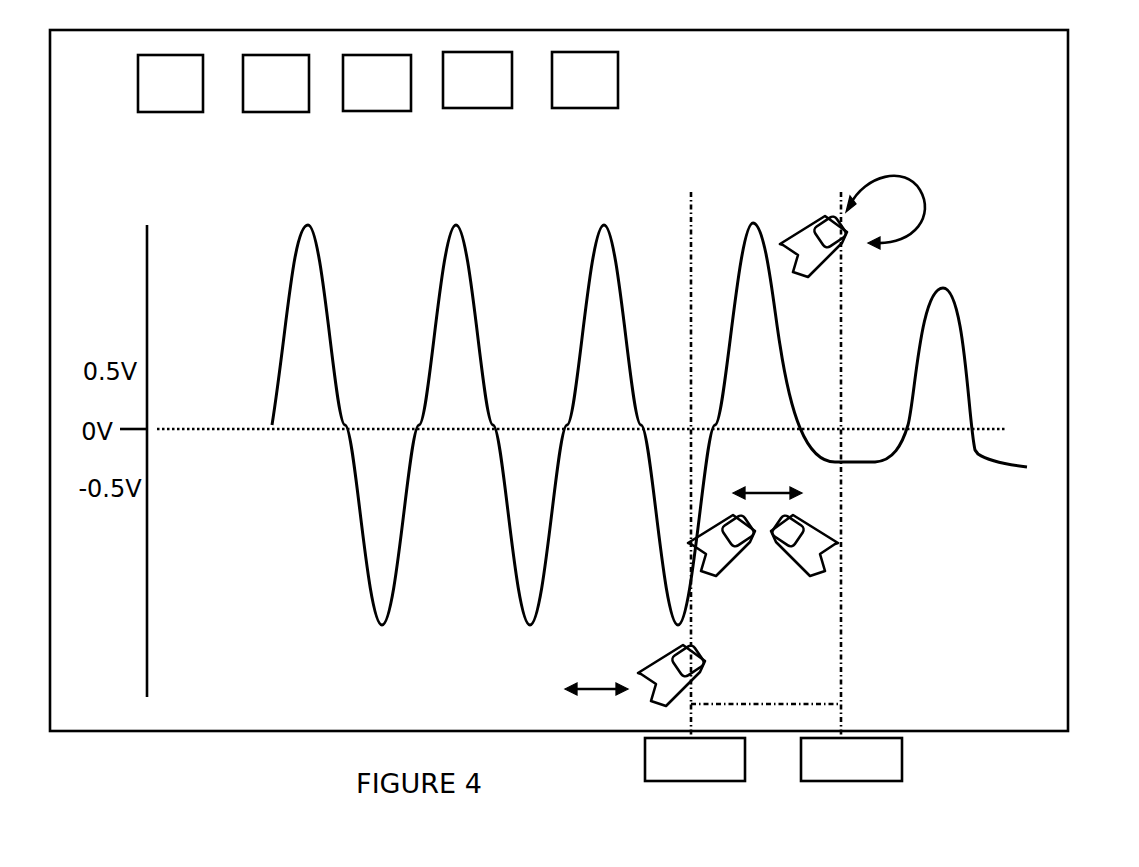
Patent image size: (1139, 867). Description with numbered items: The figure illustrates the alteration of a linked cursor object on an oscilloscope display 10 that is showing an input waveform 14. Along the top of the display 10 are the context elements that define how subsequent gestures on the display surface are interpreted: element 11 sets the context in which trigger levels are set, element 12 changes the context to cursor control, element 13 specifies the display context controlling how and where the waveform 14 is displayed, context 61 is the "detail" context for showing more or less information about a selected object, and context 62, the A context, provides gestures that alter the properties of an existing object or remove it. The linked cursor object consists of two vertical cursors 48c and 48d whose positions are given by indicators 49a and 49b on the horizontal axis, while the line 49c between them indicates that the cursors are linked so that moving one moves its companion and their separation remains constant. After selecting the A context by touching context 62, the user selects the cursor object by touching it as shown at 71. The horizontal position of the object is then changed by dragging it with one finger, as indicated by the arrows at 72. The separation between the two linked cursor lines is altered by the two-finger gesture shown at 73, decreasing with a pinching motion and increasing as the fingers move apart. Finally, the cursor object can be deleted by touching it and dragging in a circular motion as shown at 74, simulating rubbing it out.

The display 10 is at (1068, 148).
The element 11 is at (161, 112).
The element 12 is at (270, 112).
The element 13 is at (373, 111).
The context 61 is at (475, 108).
The context 62 is at (583, 108).
The waveform 14 is at (317, 238).
The vertical cursor 48c is at (690, 360).
The vertical cursor 48d is at (840, 360).
The indicator 49a is at (647, 763).
The indicator 49b is at (902, 763).
The line 49c is at (767, 704).
The touching gesture 71 is at (662, 672).
The arrows 72 is at (598, 686).
The two-finger gesture 73 is at (820, 535).
The circular motion 74 is at (790, 244).